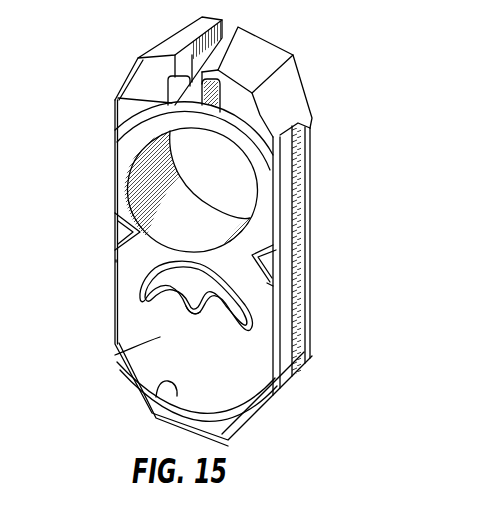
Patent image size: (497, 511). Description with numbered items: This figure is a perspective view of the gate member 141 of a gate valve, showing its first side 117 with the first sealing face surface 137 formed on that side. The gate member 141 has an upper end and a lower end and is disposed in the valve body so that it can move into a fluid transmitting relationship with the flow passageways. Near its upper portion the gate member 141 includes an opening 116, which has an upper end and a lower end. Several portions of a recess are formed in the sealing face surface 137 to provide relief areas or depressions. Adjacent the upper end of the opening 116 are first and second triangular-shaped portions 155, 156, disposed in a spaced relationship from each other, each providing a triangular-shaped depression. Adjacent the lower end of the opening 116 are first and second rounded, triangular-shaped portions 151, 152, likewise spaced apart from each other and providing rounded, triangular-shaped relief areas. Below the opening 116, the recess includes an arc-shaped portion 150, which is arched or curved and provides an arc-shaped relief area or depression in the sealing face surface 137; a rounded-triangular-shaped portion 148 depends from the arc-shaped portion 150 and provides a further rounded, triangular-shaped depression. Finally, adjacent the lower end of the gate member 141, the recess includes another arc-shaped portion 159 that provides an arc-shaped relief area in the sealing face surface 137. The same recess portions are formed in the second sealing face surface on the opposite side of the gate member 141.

The gate member 141 is at (323, 48).
The first triangular-shaped portion 155 is at (118, 100).
The second triangular-shaped portion 156 is at (306, 110).
The opening 116 is at (149, 211).
The first rounded, triangular-shaped portion 151 is at (112, 234).
The second rounded, triangular-shaped portion 152 is at (276, 255).
The first side 117 is at (133, 262).
The arc-shaped portion 150 is at (240, 291).
The rounded-triangular-shaped portion 148 is at (216, 314).
The first sealing face surface 137 is at (115, 355).
The arc-shaped portion 159 is at (166, 387).